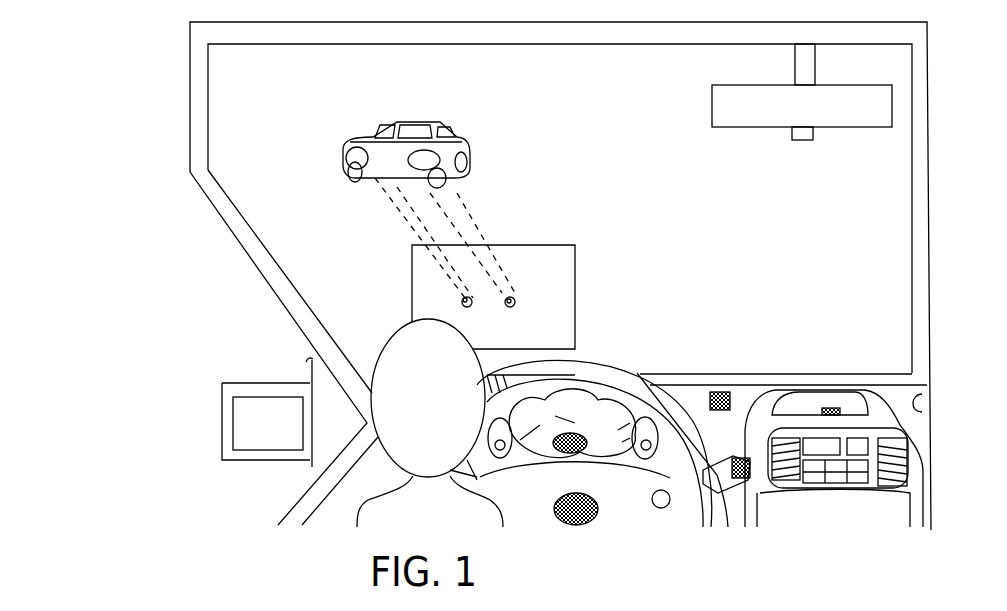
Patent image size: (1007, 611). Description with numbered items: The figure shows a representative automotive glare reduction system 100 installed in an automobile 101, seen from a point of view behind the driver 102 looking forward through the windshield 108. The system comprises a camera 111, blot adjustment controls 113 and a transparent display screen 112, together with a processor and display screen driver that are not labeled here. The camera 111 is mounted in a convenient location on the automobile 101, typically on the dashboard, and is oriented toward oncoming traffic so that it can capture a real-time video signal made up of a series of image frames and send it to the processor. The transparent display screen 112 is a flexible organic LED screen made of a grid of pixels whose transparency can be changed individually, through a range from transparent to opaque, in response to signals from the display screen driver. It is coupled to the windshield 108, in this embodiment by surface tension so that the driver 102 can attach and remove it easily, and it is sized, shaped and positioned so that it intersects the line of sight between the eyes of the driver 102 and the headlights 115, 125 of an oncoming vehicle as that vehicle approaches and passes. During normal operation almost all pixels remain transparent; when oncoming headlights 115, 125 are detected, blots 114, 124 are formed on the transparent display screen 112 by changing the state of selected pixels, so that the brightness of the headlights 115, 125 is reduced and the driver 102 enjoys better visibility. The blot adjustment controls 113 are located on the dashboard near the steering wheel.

The automotive glare reduction system 100 is at (123, 78).
The automobile 101 is at (229, 256).
The driver 102 is at (403, 380).
The windshield 108 is at (638, 136).
The camera 111 is at (727, 392).
The transparent display screen 112 is at (577, 308).
The blot adjustment controls 113 is at (668, 513).
The blot 114 is at (522, 298).
The headlight 115 is at (442, 157).
The blot 124 is at (448, 298).
The headlight 125 is at (350, 148).